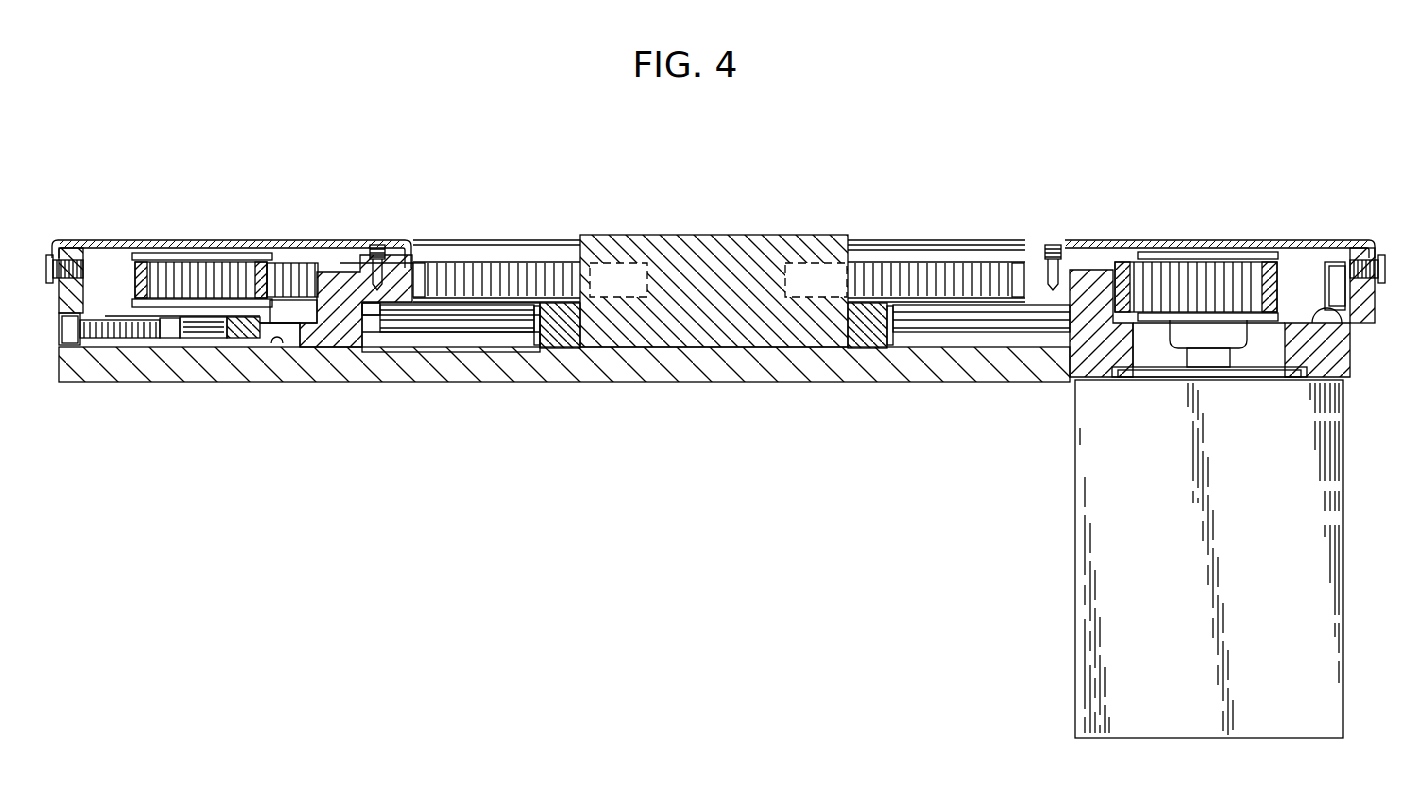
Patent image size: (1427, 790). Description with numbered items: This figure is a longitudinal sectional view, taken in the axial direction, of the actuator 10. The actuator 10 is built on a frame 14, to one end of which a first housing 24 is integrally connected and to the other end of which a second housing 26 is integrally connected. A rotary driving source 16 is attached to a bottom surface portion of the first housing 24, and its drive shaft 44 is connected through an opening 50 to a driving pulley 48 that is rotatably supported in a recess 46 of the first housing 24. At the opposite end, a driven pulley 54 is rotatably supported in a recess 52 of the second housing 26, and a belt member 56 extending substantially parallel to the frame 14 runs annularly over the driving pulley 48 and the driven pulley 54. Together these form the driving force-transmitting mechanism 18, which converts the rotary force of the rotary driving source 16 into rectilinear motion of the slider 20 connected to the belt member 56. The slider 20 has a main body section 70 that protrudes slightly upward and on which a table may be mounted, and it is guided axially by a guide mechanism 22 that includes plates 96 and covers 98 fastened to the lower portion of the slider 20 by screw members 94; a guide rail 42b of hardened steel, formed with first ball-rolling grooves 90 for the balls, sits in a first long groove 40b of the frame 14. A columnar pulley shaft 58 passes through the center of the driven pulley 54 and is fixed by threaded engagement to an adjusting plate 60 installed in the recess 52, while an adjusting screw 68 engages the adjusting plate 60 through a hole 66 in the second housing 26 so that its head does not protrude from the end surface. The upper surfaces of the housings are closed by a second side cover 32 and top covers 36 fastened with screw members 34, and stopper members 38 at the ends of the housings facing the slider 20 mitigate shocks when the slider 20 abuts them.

The actuator 10 is at (838, 134).
The frame 14 is at (669, 372).
The rotary driving source 16 is at (1328, 619).
The driving force-transmitting mechanism 18 is at (935, 262).
The slider 20 is at (747, 223).
The guide mechanism 22 is at (430, 362).
The first housing 24 is at (1345, 385).
The second housing 26 is at (238, 362).
The second side cover 32 is at (470, 245).
The screw members 34 is at (52, 255).
The top covers 36 is at (110, 240).
The stopper members 38 is at (426, 245).
The first long groove 40b is at (535, 300).
The guide rail 42b is at (378, 316).
The drive shaft 44 is at (1224, 367).
The recess 46 is at (1336, 363).
The driving pulley 48 is at (1190, 252).
The opening 50 is at (1138, 352).
The recess 52 is at (290, 340).
The driven pulley 54 is at (196, 253).
The belt member 56 is at (897, 252).
The pulley shaft 58 is at (192, 338).
The adjusting plate 60 is at (289, 305).
The hole 66 is at (62, 383).
The adjusting screw 68 is at (58, 333).
The main body section 70 is at (640, 235).
The first ball-rolling grooves 90 is at (463, 318).
The screw members 94 is at (525, 322).
The plates 96 is at (548, 340).
The covers 98 is at (566, 330).